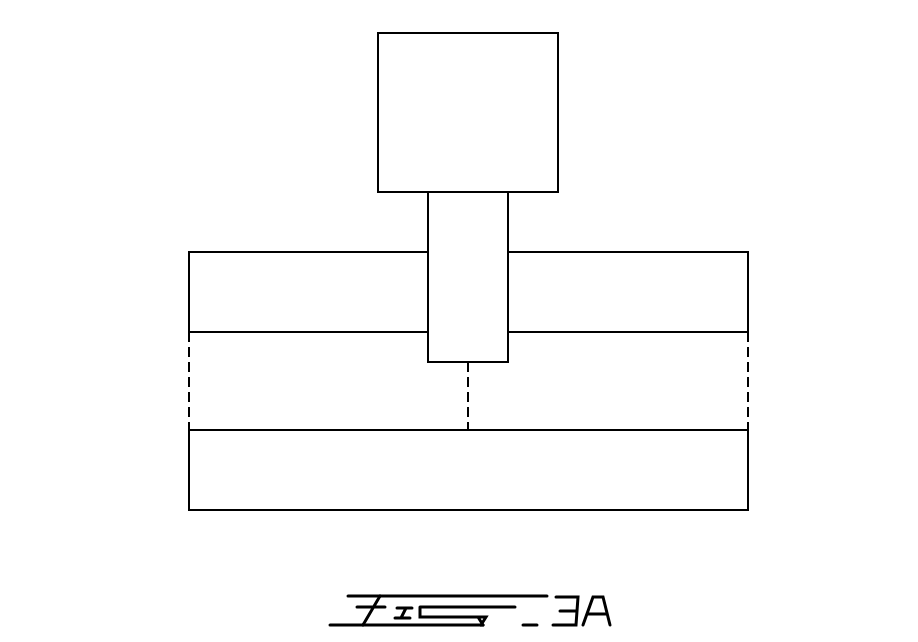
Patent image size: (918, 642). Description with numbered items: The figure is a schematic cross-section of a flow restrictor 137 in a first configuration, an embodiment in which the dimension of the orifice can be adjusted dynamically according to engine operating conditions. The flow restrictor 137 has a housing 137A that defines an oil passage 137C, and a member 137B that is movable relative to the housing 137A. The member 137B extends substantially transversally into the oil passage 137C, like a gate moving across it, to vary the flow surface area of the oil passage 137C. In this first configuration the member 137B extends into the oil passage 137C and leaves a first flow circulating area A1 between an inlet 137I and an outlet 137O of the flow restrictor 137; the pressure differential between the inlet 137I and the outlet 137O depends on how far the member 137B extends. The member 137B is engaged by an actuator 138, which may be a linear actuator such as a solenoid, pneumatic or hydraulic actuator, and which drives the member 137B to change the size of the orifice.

The flow restrictor 137 is at (738, 135).
The actuator 138 is at (558, 113).
The member 137B is at (428, 222).
The housing 137A is at (290, 512).
The oil passage 137C is at (223, 398).
The inlet 137I is at (189, 360).
The outlet 137O is at (748, 382).
The first flow circulating area A1 is at (470, 396).